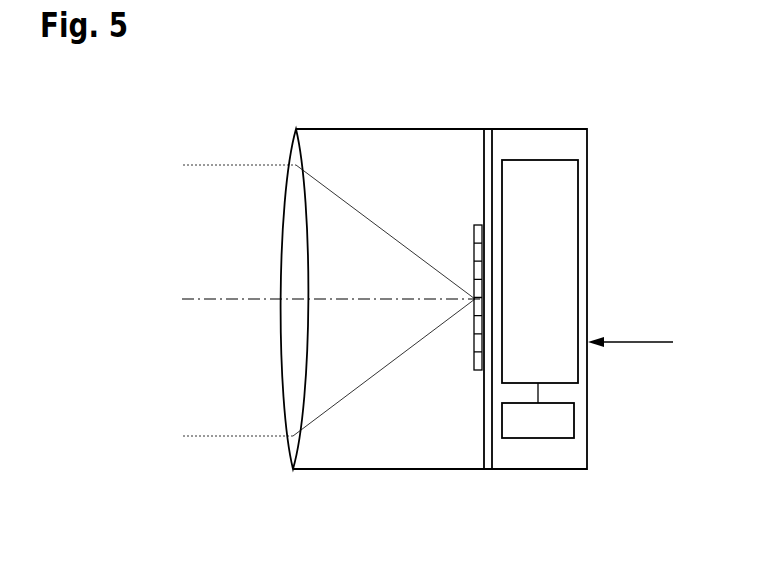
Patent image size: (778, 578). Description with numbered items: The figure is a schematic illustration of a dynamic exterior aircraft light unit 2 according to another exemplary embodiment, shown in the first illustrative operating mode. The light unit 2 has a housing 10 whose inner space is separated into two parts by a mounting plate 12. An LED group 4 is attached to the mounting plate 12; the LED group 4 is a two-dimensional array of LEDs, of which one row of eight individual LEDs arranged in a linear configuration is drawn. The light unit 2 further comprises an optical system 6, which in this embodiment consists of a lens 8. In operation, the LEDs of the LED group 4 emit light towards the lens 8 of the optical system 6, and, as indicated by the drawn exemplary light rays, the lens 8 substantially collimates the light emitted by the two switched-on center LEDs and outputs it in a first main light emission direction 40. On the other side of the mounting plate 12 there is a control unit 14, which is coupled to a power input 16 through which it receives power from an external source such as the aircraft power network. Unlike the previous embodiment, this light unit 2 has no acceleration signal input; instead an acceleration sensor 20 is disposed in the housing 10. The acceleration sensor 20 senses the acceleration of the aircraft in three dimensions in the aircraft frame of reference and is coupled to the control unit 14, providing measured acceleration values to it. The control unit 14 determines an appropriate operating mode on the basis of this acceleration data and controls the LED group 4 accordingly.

The dynamic exterior aircraft light unit 2 is at (240, 110).
The LED group 4 is at (474, 363).
The optical system 6 is at (244, 364).
The lens 8 is at (285, 201).
The housing 10 is at (578, 129).
The mounting plate 12 is at (492, 129).
The control unit 14 is at (534, 160).
The power input 16 is at (638, 341).
The acceleration sensor 20 is at (534, 438).
The first main light emission direction 40 is at (209, 299).